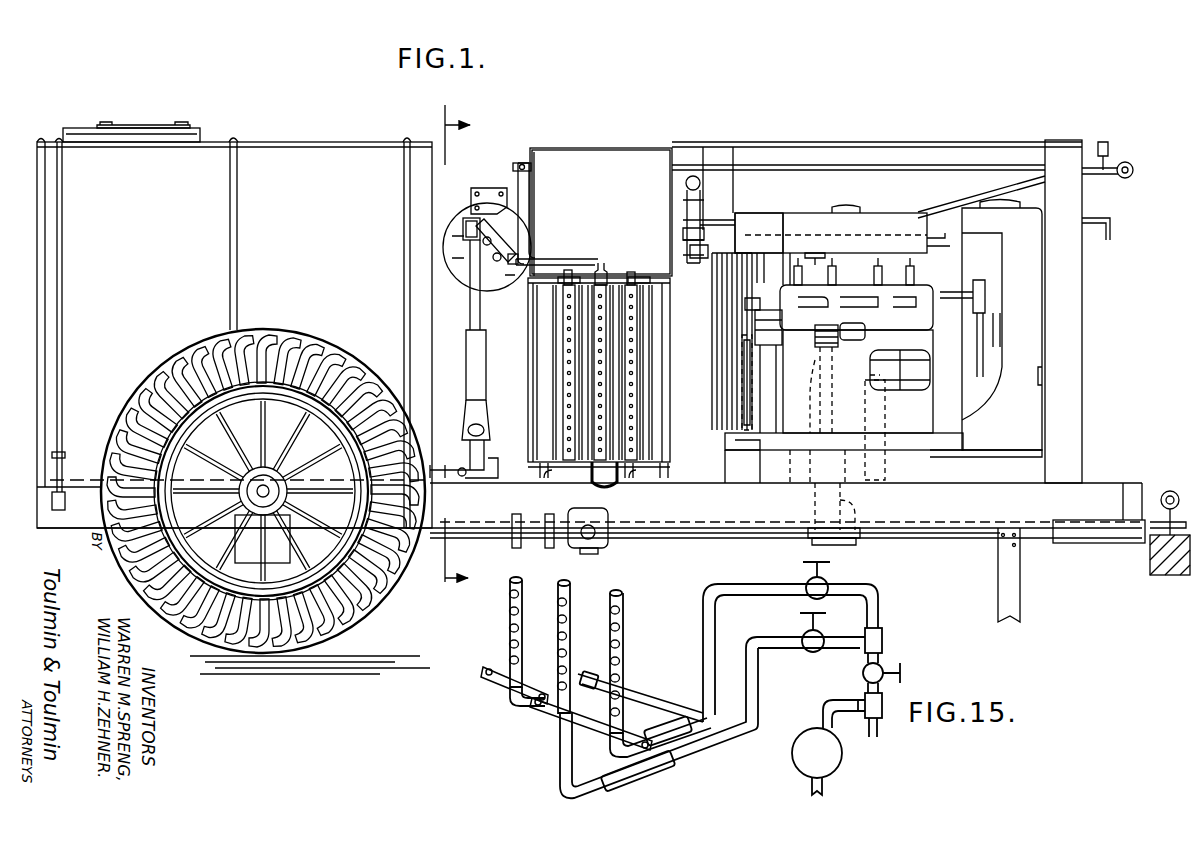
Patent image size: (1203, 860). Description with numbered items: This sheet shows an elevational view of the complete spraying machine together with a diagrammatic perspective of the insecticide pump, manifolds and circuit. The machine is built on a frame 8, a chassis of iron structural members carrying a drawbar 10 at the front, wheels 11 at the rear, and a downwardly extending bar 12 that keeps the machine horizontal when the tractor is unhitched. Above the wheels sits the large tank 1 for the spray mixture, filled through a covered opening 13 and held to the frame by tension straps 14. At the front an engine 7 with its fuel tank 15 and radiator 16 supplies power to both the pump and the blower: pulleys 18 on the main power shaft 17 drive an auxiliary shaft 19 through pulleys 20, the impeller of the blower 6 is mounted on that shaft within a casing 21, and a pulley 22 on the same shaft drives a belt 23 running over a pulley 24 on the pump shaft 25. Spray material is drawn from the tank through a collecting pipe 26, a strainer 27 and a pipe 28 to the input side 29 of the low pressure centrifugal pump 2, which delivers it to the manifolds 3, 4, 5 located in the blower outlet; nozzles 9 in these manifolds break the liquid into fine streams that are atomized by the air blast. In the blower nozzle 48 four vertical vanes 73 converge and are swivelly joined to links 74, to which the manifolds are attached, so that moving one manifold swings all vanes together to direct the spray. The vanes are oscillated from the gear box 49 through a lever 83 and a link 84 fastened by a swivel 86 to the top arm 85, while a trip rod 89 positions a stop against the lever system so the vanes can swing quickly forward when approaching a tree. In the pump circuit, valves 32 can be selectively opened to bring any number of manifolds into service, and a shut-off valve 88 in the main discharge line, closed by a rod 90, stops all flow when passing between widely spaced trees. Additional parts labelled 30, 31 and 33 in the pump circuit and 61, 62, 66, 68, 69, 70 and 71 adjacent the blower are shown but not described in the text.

In FIG. 1, the tank 1 is at (341, 162).
In FIG. 1, the low pressure pump 2 is at (833, 390).
In FIG. 15, the low pressure pump 2 is at (817, 753).
In FIG. 1, the manifold 3 is at (572, 272).
In FIG. 15, the manifold 3 is at (521, 583).
In FIG. 1, the manifold 4 is at (608, 272).
In FIG. 15, the manifold 4 is at (571, 589).
In FIG. 1, the manifold 5 is at (635, 277).
In FIG. 15, the manifold 5 is at (624, 602).
In FIG. 1, the blower 6 is at (657, 148).
In FIG. 1, the engine 7 is at (920, 210).
In FIG. 1, the frame 8 is at (758, 512).
In FIG. 1, the nozzles 9 is at (636, 468).
In FIG. 15, the nozzles 9 is at (508, 630).
In FIG. 1, the drawbar 10 is at (1163, 496).
In FIG. 1, the wheels 11 is at (305, 340).
In FIG. 1, the bar 12 is at (1016, 598).
In FIG. 1, the covered opening 13 is at (186, 128).
In FIG. 1, the tension straps 14 is at (58, 350).
In FIG. 1, the fuel tank 15 is at (872, 220).
In FIG. 1, the radiator 16 is at (986, 329).
In FIG. 1, the main power shaft 17 is at (700, 380).
In FIG. 1, the pulleys 18 is at (735, 396).
In FIG. 1, the auxiliary shaft 19 is at (769, 268).
In FIG. 1, the pulleys 20 is at (700, 240).
In FIG. 1, the casing 21 is at (640, 148).
In FIG. 1, the pulley 22 is at (752, 262).
In FIG. 1, the belt 23 is at (750, 298).
In FIG. 1, the pulley 24 is at (760, 378).
In FIG. 1, the pump shaft 25 is at (762, 226).
In FIG. 1, the collecting pipe 26 is at (470, 540).
In FIG. 1, the strainer 27 is at (812, 530).
In FIG. 1, the pipe 28 is at (882, 445).
In FIG. 1, the input side of pump 29 is at (829, 466).
In FIG. 15, the input side of pump 29 is at (826, 786).
In FIG. 1, the pipe 30 is at (842, 347).
In FIG. 15, the pipe 30 is at (833, 700).
In FIG. 1, the fitting 31 is at (820, 252).
In FIG. 15, the fitting 31 is at (882, 630).
In FIG. 1, the valves 32 is at (688, 246).
In FIG. 15, the valves 32 is at (820, 635).
In FIG. 1, the pipe 33 is at (713, 462).
In FIG. 15, the pipe 33 is at (760, 656).
In FIG. 1, the nozzle 48 is at (520, 470).
In FIG. 1, the gear box 49 is at (470, 214).
In FIG. 1, the bracket 61 is at (489, 222).
In FIG. 1, the link 62 is at (515, 248).
In FIG. 1, the disc 66 is at (452, 247).
In FIG. 1, the rod 68 is at (470, 300).
In FIG. 1, the cylinder 69 is at (464, 438).
In FIG. 1, the foot 70 is at (467, 462).
In FIG. 1, the arm 71 is at (505, 237).
In FIG. 1, the vanes 73 is at (550, 478).
In FIG. 1, the links 74 is at (566, 275).
In FIG. 15, the links 74 is at (600, 725).
In FIG. 1, the lever 83 is at (532, 183).
In FIG. 1, the link 84 is at (514, 190).
In FIG. 1, the top arm 85 is at (592, 262).
In FIG. 1, the swivel 86 is at (518, 260).
In FIG. 15, the valve 88 is at (885, 670).
In FIG. 1, the trip rod 89 is at (788, 165).
In FIG. 1, the rod 90 is at (1085, 219).